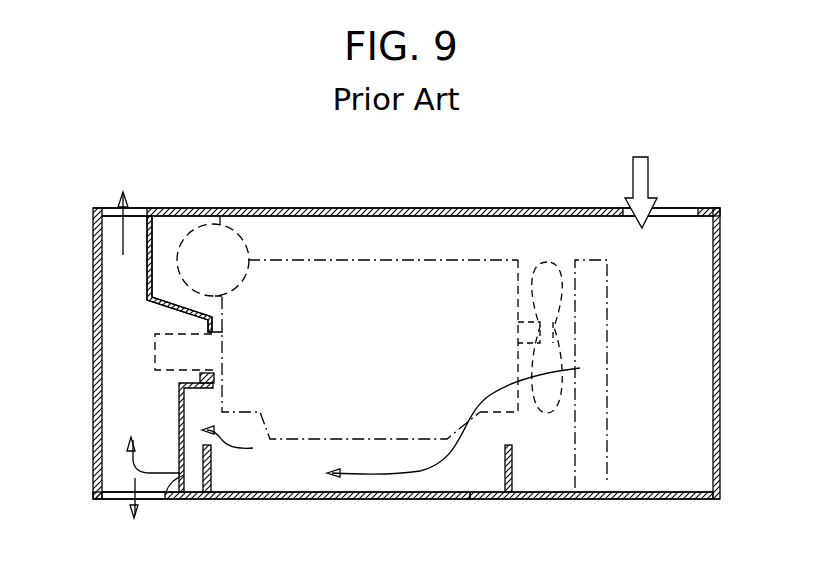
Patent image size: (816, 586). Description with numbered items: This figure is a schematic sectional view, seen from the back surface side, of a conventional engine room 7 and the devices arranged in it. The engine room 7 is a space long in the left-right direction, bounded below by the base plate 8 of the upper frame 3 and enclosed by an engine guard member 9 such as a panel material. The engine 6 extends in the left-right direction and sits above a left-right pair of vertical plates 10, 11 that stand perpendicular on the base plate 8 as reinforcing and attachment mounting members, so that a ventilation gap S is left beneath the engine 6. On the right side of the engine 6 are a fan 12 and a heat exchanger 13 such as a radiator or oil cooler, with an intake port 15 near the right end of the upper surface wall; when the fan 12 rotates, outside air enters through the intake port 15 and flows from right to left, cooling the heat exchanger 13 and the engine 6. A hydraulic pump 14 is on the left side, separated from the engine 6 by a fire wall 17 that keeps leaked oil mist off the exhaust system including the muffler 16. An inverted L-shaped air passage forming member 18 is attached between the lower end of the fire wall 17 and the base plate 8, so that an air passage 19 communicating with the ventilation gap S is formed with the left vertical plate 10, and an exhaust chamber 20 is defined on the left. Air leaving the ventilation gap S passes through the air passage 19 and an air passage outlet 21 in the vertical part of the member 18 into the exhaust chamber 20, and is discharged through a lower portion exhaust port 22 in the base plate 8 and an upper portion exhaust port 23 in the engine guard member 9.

The upper frame 3 is at (543, 500).
The engine 6 is at (328, 258).
The engine room 7 is at (427, 246).
The base plate 8 is at (397, 498).
The engine guard member 9 is at (720, 308).
The left vertical plate 10 is at (212, 472).
The right vertical plate 11 is at (503, 462).
The fan 12 is at (543, 258).
The heat exchanger 13 is at (607, 323).
The hydraulic pump 14 is at (157, 352).
The intake port 15 is at (673, 210).
The muffler 16 is at (216, 205).
The fire wall 17 is at (150, 283).
The air passage forming member 18 is at (180, 410).
The air passage 19 is at (191, 447).
The exhaust chamber 20 is at (118, 315).
The air passage outlet 21 is at (180, 482).
The lower portion exhaust port 22 is at (120, 497).
The upper portion exhaust port 23 is at (136, 209).
The ventilation gap S is at (317, 462).